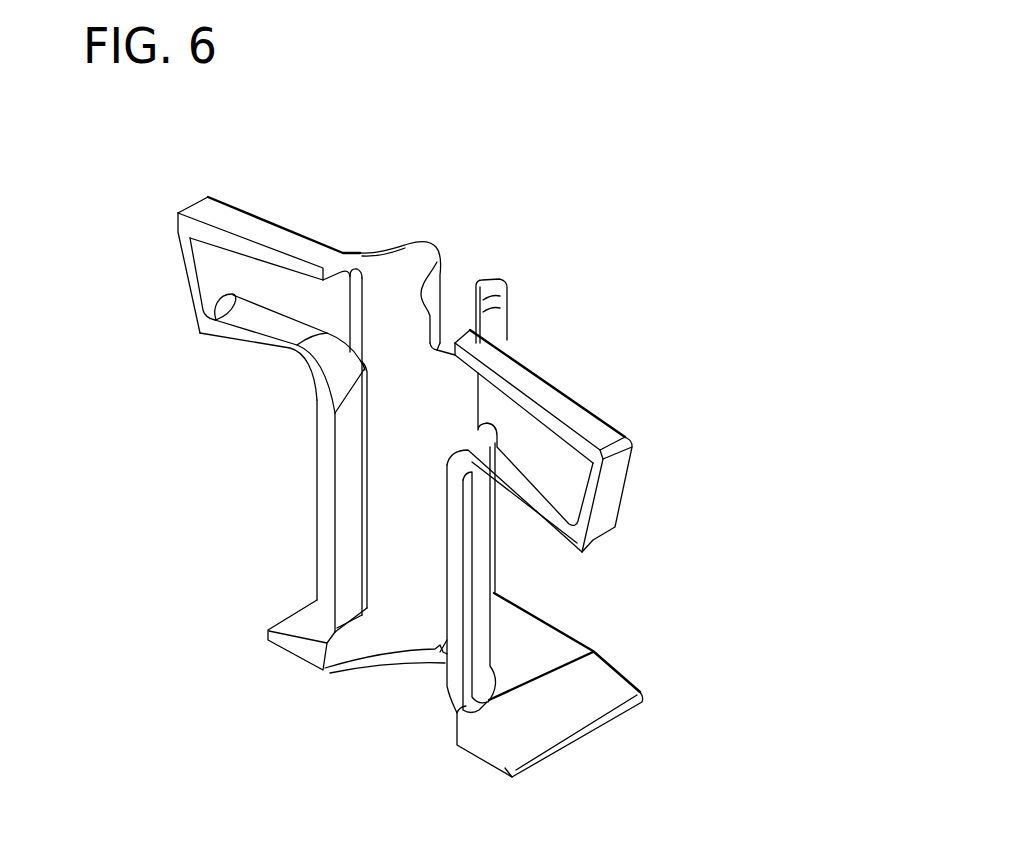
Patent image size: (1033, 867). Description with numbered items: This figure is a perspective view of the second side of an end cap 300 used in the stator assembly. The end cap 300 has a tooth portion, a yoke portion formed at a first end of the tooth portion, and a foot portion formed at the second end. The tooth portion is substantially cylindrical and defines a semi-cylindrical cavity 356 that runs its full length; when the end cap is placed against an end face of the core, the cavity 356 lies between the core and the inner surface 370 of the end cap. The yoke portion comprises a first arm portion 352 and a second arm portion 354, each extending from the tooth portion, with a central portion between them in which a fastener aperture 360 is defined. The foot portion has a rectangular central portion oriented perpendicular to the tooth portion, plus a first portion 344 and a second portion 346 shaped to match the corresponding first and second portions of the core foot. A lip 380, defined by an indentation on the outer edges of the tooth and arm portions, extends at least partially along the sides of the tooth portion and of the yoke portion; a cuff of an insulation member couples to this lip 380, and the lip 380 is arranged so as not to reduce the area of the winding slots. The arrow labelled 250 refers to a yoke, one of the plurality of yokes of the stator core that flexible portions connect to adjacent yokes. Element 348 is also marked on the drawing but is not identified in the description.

The end cap 300 is at (578, 153).
The yoke 250 is at (314, 487).
The second arm portion 354 is at (247, 216).
The first arm portion 352 is at (570, 411).
The fastener aperture 360 is at (460, 290).
The inner surface 370 is at (433, 493).
The lip 380 is at (317, 532).
The second portion of foot portion 346 is at (293, 623).
The web 348 is at (418, 690).
The semi-cylindrical cavity 356 is at (403, 684).
The first portion of foot portion 344 is at (558, 708).